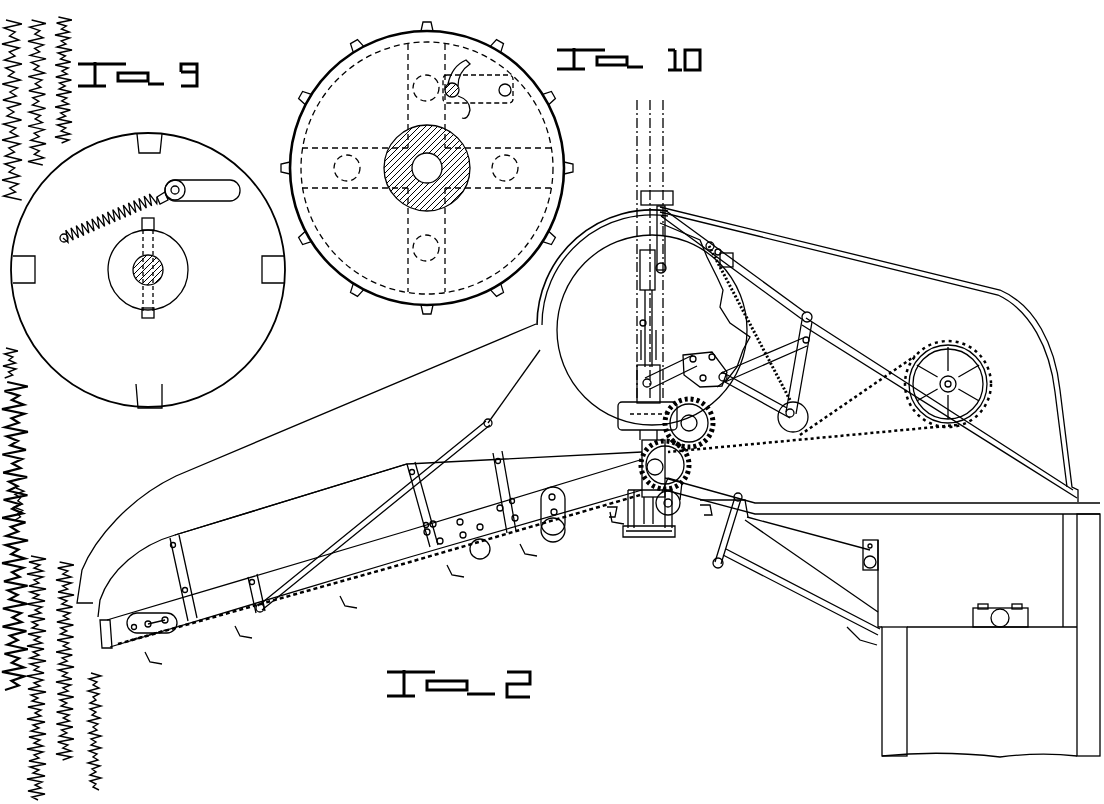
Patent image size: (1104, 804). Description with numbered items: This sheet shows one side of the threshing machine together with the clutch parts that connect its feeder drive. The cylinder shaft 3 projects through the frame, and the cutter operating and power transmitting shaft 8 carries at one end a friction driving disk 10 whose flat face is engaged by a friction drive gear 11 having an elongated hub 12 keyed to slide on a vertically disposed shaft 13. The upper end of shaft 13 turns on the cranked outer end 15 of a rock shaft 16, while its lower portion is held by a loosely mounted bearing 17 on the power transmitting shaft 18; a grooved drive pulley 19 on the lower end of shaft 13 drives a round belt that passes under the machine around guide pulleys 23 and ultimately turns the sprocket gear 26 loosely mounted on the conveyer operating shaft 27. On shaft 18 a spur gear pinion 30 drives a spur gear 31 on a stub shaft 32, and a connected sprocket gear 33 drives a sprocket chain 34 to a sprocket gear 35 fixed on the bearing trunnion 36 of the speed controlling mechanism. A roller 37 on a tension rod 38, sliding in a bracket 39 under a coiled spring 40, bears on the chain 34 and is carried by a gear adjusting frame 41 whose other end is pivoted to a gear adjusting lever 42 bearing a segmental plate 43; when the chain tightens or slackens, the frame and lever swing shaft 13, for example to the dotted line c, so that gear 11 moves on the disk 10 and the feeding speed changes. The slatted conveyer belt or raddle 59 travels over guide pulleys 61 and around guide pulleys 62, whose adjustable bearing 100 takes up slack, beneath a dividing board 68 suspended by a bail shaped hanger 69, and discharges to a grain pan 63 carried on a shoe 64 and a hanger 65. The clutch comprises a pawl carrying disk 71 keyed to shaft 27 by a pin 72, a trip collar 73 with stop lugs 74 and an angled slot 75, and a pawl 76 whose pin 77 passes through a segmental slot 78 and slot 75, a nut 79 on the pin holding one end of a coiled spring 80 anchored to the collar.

In FIG. 2, the shaft 3 is at (998, 628).
In FIG. 2, the cutter operating and power transmitting shaft 8 is at (648, 326).
In FIG. 2, the friction driving disk 10 is at (675, 198).
In FIG. 2, the friction drive gear 11 is at (585, 425).
In FIG. 2, the elongated hub 12 is at (642, 380).
In FIG. 2, the vertically disposed shaft 13 is at (642, 295).
In FIG. 2, the cranked outer end 15 is at (668, 270).
In FIG. 2, the rock shaft 16 is at (640, 250).
In FIG. 2, the loosely mounted bearing 17 is at (628, 470).
In FIG. 2, the power transmitting shaft 18 is at (665, 468).
In FIG. 2, the grooved drive pulley 19 is at (640, 530).
In FIG. 2, the guide pulleys 23 is at (618, 520).
In FIG. 10, the sprocket gear 26 is at (506, 48).
In FIG. 9, the conveyer operating shaft 27 is at (140, 280).
In FIG. 10, the conveyer operating shaft 27 is at (412, 190).
In FIG. 2, the conveyer operating shaft 27 is at (878, 562).
In FIG. 2, the spur gear pinion 30 is at (694, 465).
In FIG. 2, the spur gear 31 is at (705, 432).
In FIG. 2, the stub shaft 32 is at (622, 410).
In FIG. 2, the sprocket gear 33 is at (712, 418).
In FIG. 2, the sprocket chain 34 is at (880, 434).
In FIG. 2, the sprocket gear 35 is at (975, 358).
In FIG. 2, the bearing trunnion 36 is at (962, 385).
In FIG. 2, the roller 37 is at (805, 432).
In FIG. 2, the tension rod 38 is at (755, 320).
In FIG. 2, the bracket 39 is at (734, 258).
In FIG. 2, the coiled spring 40 is at (760, 303).
In FIG. 2, the gear adjusting frame 41 is at (810, 375).
In FIG. 2, the gear adjusting lever 42 is at (693, 355).
In FIG. 2, the segmental plate 43 is at (728, 360).
In FIG. 2, the slatted conveyer belt or raddle 59 is at (384, 578).
In FIG. 2, the guide pulleys 61 is at (556, 543).
In FIG. 2, the guide pulleys 62 is at (145, 645).
In FIG. 2, the grain pan 63 is at (806, 598).
In FIG. 2, the shoe 64 is at (866, 647).
In FIG. 2, the hanger 65 is at (715, 570).
In FIG. 2, the dividing board 68 is at (238, 450).
In FIG. 2, the bail shaped hanger 69 is at (588, 222).
In FIG. 10, the pawl carrying disk 71 is at (427, 168).
In FIG. 9, the pin 72 is at (150, 318).
In FIG. 9, the trip collar 73 is at (148, 270).
In FIG. 9, the stop lugs 74 is at (150, 136).
In FIG. 9, the slot 75 is at (228, 200).
In FIG. 10, the pawl 76 is at (500, 103).
In FIG. 9, the pin 77 is at (182, 182).
In FIG. 10, the pin 77 is at (470, 116).
In FIG. 10, the segmental slot 78 is at (468, 64).
In FIG. 9, the nut 79 is at (166, 200).
In FIG. 9, the coiled spring 80 is at (108, 213).
In FIG. 2, the adjustable bearing 100 is at (140, 612).
In FIG. 2, the dotted line c is at (648, 248).